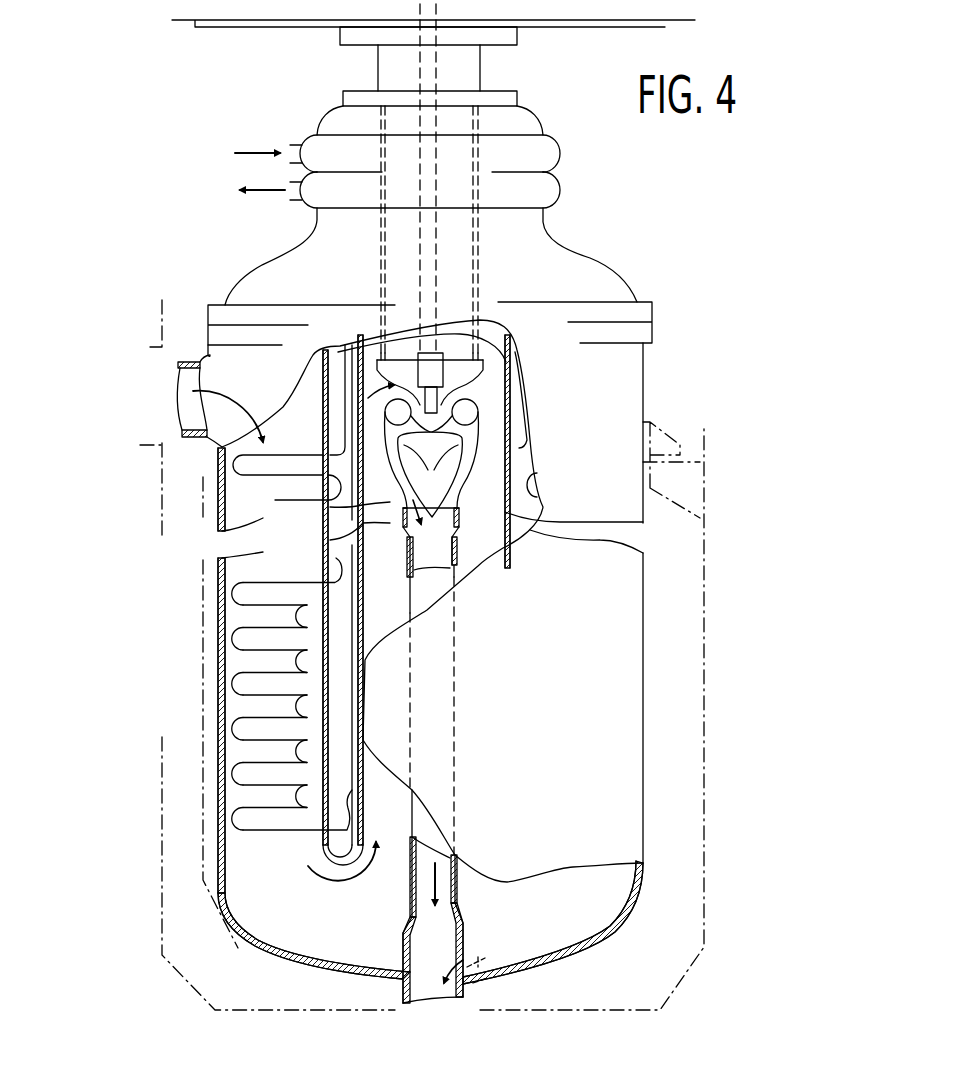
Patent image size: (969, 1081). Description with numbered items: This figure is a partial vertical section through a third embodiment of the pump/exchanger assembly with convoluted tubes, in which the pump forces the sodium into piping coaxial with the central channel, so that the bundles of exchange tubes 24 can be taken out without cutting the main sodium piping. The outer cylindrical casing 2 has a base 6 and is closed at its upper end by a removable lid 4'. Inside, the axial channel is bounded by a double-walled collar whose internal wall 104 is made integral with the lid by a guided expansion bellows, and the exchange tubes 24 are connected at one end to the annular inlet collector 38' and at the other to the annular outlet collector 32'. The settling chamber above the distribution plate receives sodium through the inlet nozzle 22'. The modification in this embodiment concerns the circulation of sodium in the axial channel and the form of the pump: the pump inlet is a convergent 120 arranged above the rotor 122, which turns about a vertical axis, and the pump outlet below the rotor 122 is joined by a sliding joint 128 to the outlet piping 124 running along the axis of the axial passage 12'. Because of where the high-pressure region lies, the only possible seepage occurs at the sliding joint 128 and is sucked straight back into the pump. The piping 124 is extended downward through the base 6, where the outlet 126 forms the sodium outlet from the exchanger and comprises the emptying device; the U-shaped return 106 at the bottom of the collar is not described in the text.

The annular inlet collector 38' is at (397, 133).
The annular outlet collector 32' is at (400, 204).
The removable lid 4' is at (430, 276).
The inlet nozzle 22' is at (214, 376).
The convergent 120 is at (470, 382).
The rotor 122 is at (440, 448).
The sliding joint 128 is at (505, 505).
The internal wall 104 is at (358, 535).
The axial passage 12' is at (450, 710).
The exchange tube 24 is at (236, 704).
The outer cylindrical casing 2 is at (643, 718).
The outlet piping 124 is at (430, 833).
The U-bend 106 is at (330, 850).
The outlet 126 is at (437, 935).
The base 6 is at (567, 953).